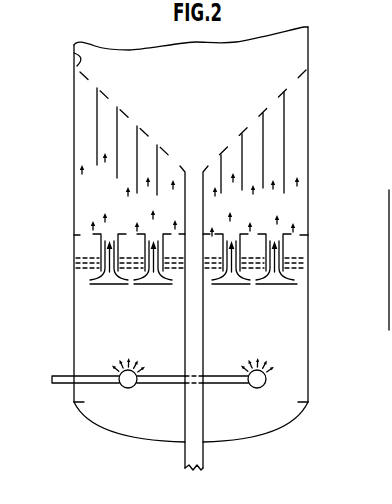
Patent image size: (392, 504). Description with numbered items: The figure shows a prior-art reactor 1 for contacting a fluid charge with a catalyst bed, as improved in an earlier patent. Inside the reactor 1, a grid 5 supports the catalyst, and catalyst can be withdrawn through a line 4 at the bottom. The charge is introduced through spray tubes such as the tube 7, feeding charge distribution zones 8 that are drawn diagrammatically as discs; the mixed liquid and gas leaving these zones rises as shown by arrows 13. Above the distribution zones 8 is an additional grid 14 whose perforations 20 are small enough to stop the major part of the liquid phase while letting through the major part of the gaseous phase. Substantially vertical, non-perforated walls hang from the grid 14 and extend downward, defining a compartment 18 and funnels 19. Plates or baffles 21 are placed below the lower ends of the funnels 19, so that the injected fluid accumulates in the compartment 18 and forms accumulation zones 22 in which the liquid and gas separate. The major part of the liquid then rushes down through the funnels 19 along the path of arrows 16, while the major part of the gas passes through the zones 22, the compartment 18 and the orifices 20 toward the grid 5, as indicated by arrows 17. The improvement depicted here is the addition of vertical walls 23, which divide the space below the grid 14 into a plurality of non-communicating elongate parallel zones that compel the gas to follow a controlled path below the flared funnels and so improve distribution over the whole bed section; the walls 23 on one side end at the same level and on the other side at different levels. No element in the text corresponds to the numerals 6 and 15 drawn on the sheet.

The reactor 1 is at (309, 43).
The line 4 is at (185, 467).
The grid 5 is at (74, 53).
The conical partition 6 is at (78, 73).
The spray tube 7 is at (53, 384).
The distribution zones 8 is at (128, 388).
The arrows 13 is at (263, 355).
The additional grid 14 is at (88, 235).
The cup 15 is at (285, 246).
The arrows 16 is at (297, 287).
The arrows 17 is at (277, 213).
The compartment 18 is at (87, 240).
The funnels 19 is at (280, 250).
The perforations 20 is at (89, 231).
The plates or baffles 21 is at (110, 284).
The accumulation zones 22 is at (82, 268).
The vertical walls 23 is at (97, 136).